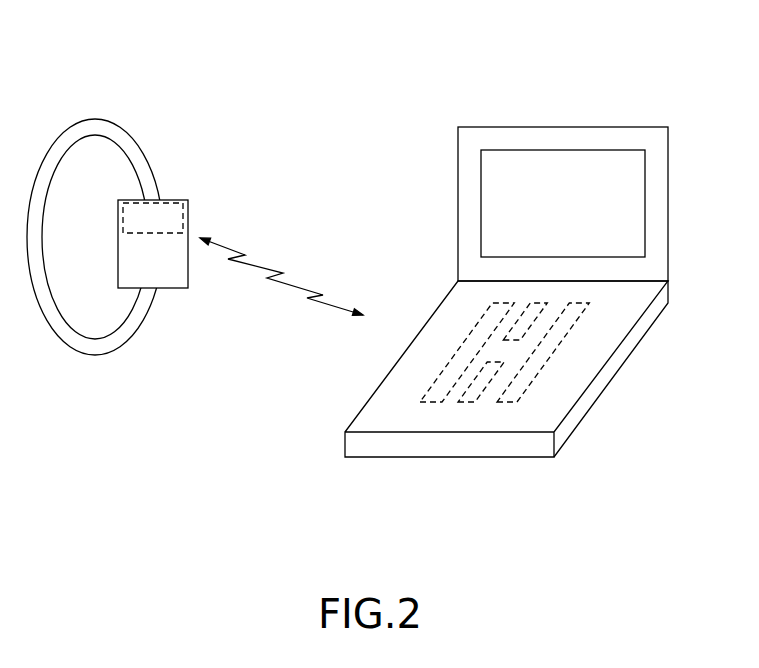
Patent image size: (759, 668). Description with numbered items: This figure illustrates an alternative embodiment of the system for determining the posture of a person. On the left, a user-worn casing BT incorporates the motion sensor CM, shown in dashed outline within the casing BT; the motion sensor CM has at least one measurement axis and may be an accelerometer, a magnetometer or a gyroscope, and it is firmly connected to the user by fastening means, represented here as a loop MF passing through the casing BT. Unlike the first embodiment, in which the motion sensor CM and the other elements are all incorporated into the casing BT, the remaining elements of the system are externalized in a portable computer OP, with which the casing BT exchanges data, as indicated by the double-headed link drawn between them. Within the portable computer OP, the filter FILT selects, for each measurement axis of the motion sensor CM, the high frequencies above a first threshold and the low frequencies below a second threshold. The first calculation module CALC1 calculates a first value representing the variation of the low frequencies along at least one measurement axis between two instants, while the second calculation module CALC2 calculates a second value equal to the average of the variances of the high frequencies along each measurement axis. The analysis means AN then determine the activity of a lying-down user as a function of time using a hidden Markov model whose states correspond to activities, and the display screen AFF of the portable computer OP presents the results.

The magnetic field loop / ring MF is at (110, 120).
The casing BT is at (177, 289).
The motion sensor CM is at (175, 217).
The display screen AFF is at (535, 150).
The first calculation module CALC1 is at (538, 300).
The second calculation module CALC2 is at (470, 402).
The filter FILT is at (455, 352).
The analysis means AN is at (570, 332).
The portable computer OP is at (618, 372).